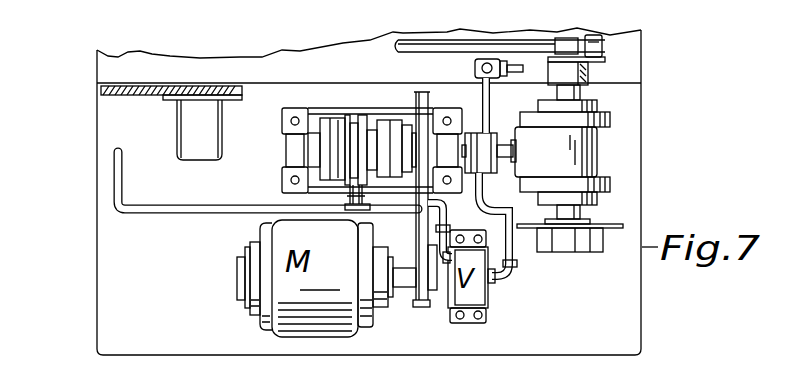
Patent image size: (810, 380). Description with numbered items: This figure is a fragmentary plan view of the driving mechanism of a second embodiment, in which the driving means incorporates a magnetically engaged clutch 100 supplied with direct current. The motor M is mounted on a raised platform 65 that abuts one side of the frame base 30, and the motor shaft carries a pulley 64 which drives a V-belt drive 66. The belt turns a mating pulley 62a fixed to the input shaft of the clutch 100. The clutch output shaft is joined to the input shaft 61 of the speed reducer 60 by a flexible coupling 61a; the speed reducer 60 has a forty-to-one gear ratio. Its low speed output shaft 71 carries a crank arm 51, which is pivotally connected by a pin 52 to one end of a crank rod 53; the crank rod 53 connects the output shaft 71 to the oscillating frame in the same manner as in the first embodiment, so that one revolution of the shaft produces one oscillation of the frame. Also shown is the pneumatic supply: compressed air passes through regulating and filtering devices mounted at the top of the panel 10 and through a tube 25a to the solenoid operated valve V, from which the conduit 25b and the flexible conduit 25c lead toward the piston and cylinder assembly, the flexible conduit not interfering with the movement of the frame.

The panel 10 is at (170, 92).
The frame base 30 is at (88, 86).
The clutch 100 is at (282, 131).
The tube 25a is at (263, 205).
The crank rod 53 is at (398, 46).
The pulley 62a is at (416, 97).
The conduit 25c is at (483, 88).
The input shaft 61 is at (506, 142).
The flexible coupling 61a is at (484, 186).
The pin 52 is at (600, 57).
The crank arm 51 is at (588, 66).
The low speed output shaft 71 is at (582, 95).
The speed reducer 60 is at (569, 176).
The V-belt drive 66 is at (417, 233).
The pulley 64 is at (416, 304).
The raised platform 65 is at (370, 298).
The conduit 25b is at (512, 264).